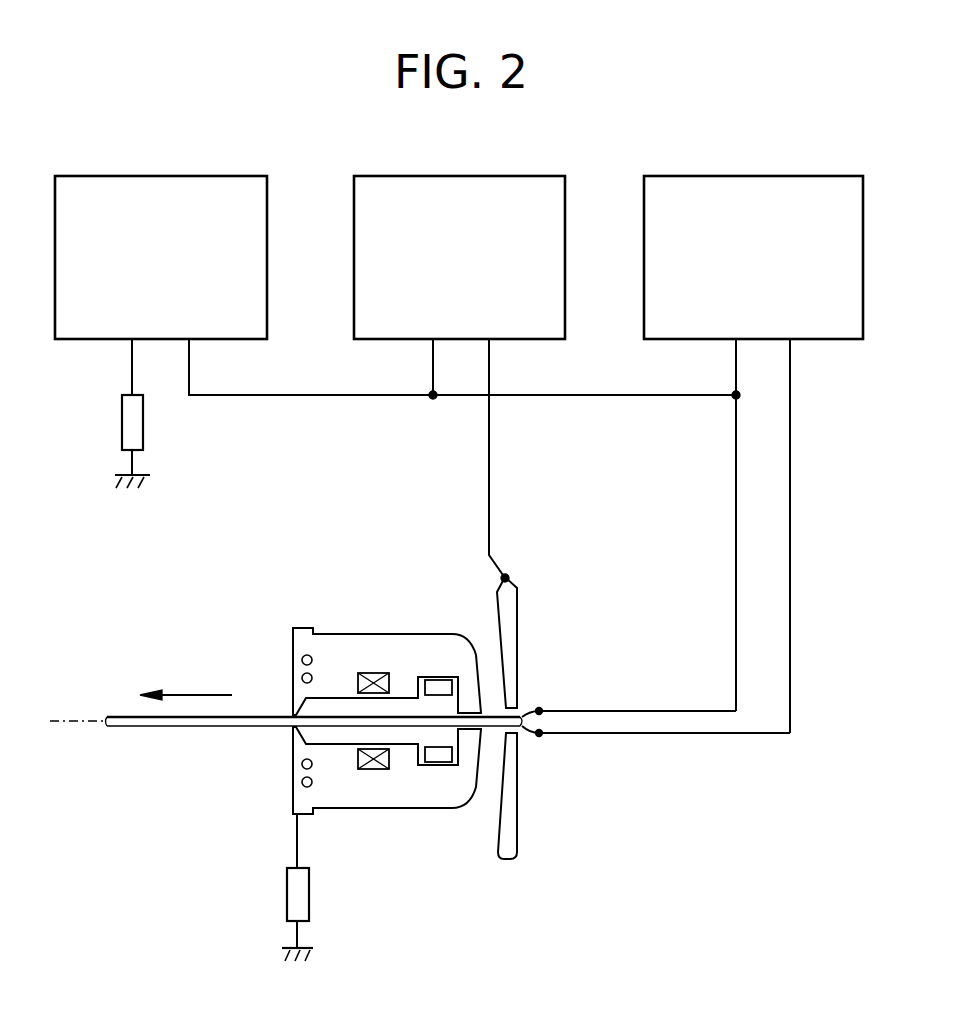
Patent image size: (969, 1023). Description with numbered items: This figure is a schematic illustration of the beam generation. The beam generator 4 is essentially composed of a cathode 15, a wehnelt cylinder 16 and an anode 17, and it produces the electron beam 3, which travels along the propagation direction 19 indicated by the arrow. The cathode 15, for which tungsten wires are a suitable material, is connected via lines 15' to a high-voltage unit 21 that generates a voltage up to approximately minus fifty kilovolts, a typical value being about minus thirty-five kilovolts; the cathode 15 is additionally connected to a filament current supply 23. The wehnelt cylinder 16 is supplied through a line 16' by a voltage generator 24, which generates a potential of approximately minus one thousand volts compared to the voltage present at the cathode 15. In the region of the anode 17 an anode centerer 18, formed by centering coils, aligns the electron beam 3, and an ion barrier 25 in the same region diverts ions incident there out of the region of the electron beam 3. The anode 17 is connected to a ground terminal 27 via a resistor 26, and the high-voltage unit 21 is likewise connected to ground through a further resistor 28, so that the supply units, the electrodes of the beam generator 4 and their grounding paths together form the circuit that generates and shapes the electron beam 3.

The high-voltage unit 21 is at (133, 273).
The voltage generator 24 is at (477, 273).
The filament current supply 23 is at (781, 275).
The resistor 28 is at (143, 420).
The ground terminal 27 is at (150, 478).
The line 16' is at (515, 458).
The beam generator 4 is at (517, 608).
The wehnelt cylinder 16 is at (497, 829).
The anode 17 is at (408, 810).
The anode centerer 18 is at (370, 673).
The ion barrier 25 is at (438, 680).
The electron beam 3 is at (187, 727).
The lines 15' is at (629, 694).
The cathode 15 is at (656, 752).
The propagation direction 19 is at (195, 693).
The resistor 26 is at (287, 903).